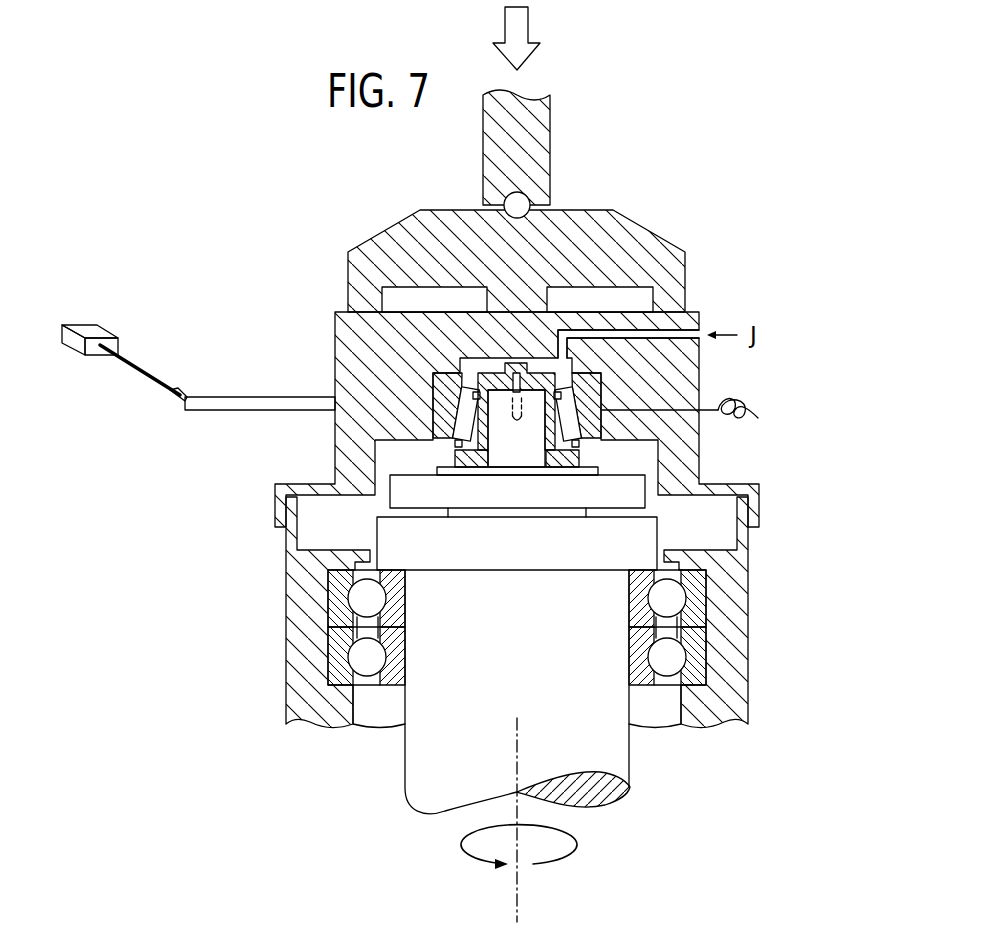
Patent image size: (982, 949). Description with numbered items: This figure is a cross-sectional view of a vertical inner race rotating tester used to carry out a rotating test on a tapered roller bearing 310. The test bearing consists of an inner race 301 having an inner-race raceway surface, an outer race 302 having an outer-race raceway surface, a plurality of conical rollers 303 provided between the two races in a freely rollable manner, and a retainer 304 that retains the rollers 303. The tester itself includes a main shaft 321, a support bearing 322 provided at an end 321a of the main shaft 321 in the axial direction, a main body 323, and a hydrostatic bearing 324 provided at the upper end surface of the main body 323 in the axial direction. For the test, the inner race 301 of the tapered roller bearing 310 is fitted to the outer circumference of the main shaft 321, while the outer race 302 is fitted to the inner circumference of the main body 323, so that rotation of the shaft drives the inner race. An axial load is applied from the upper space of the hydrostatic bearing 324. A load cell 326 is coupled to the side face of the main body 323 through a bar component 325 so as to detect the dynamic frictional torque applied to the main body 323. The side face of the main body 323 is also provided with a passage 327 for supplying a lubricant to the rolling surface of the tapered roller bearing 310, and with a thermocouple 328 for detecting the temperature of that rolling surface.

The inner race 301 is at (503, 457).
The outer race 302 is at (442, 413).
The rollers 303 is at (467, 397).
The retainer 304 is at (458, 378).
The tapered roller bearing 310 is at (590, 448).
The main shaft 321 is at (427, 757).
The end of the main shaft 321a is at (390, 486).
The support bearing 322 is at (327, 663).
The main body 323 is at (678, 368).
The hydrostatic bearing 324 is at (628, 238).
The bar component 325 is at (240, 400).
The load cell 326 is at (90, 330).
The passage 327 is at (662, 310).
The thermocouple 328 is at (733, 417).